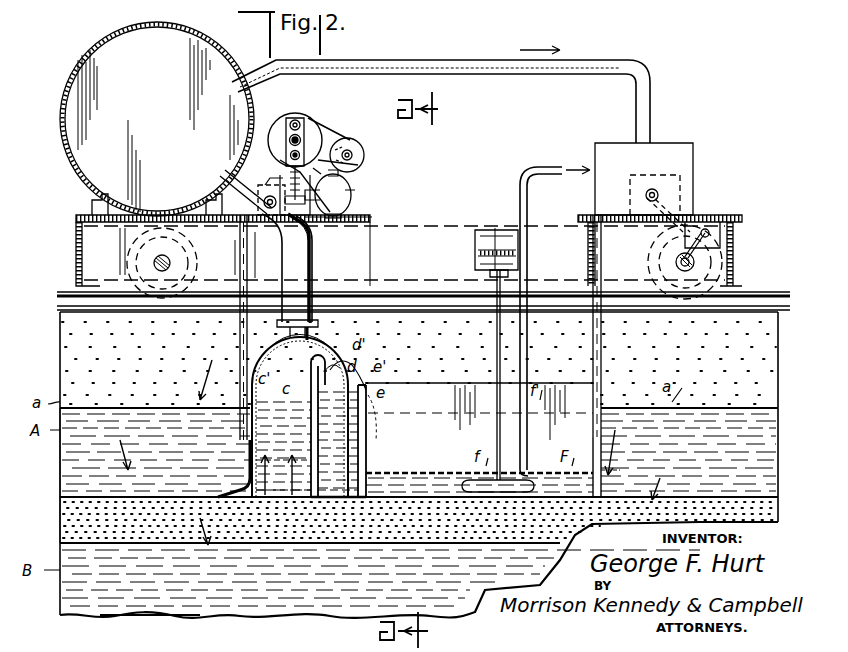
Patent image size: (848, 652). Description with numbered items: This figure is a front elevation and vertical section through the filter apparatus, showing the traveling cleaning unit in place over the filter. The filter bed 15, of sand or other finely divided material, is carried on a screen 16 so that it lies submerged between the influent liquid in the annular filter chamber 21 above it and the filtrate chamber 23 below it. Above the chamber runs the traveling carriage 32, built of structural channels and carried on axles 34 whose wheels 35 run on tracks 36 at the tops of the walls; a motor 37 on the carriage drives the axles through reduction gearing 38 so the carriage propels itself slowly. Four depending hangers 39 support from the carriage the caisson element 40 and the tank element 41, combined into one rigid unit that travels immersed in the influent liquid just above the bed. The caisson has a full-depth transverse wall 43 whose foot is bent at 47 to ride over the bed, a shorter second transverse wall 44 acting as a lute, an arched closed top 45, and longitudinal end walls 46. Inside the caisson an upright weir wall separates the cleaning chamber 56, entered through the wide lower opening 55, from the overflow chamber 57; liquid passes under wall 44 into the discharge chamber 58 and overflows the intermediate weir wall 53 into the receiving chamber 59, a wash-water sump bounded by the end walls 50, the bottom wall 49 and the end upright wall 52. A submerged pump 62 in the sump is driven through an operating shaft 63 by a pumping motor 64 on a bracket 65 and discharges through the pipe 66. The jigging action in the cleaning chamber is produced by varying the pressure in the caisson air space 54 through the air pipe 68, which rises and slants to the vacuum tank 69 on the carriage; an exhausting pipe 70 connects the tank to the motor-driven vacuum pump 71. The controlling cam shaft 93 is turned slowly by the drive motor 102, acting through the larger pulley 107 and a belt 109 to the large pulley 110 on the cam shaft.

The vacuum tank 69 is at (160, 99).
The exhausting pipe 70 is at (465, 60).
The cam shaft 93 is at (290, 120).
The large pulley 110 is at (304, 120).
The belt 109 is at (330, 130).
The larger pulley 107 is at (355, 148).
The drive motor 102 is at (343, 194).
The discharge pipe 66 is at (542, 161).
The vacuum pump 71 is at (660, 143).
The motor 37 is at (630, 194).
The traveling carriage 32 is at (76, 221).
The pumping motor 64 is at (492, 230).
The bracket 65 is at (478, 258).
The operating shaft 63 is at (497, 332).
The pump 62 is at (505, 480).
The air pipe 68 is at (312, 252).
The longitudinal walls 46 is at (310, 330).
The closed top 45 is at (322, 342).
The reduction gearing 38 is at (720, 232).
The wheels 35 is at (162, 292).
The axles 34 is at (697, 266).
The tracks 36 is at (758, 296).
The hangers 39 is at (240, 324).
The caisson element 40 is at (262, 350).
The caisson air space 54 is at (300, 343).
The transverse wall 43 is at (252, 376).
The second transverse wall 44 is at (368, 448).
The intermediate transverse wall 53 is at (380, 430).
The discharge chamber 58 is at (356, 500).
The overflow chamber 57 is at (318, 500).
The cleaning chamber 56 is at (272, 500).
The lower opening 55 is at (250, 498).
The foot 47 is at (252, 448).
The end walls 50 is at (562, 380).
The receiving chamber 59 is at (479, 461).
The bottom wall 49 is at (400, 474).
The tank element 41 is at (601, 394).
The upright wall 52 is at (601, 472).
The filter chamber 21 is at (60, 454).
The filter bed 15 is at (62, 500).
The screen 16 is at (64, 543).
The filtrate chamber 23 is at (136, 612).